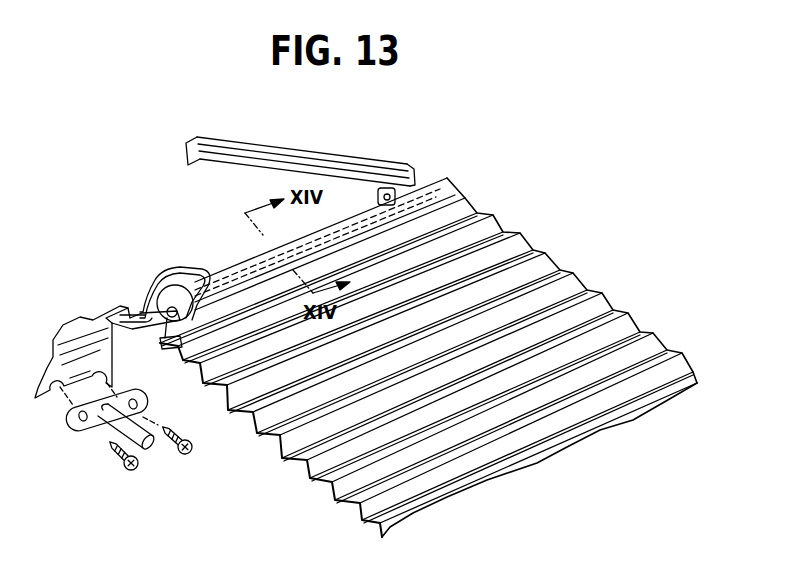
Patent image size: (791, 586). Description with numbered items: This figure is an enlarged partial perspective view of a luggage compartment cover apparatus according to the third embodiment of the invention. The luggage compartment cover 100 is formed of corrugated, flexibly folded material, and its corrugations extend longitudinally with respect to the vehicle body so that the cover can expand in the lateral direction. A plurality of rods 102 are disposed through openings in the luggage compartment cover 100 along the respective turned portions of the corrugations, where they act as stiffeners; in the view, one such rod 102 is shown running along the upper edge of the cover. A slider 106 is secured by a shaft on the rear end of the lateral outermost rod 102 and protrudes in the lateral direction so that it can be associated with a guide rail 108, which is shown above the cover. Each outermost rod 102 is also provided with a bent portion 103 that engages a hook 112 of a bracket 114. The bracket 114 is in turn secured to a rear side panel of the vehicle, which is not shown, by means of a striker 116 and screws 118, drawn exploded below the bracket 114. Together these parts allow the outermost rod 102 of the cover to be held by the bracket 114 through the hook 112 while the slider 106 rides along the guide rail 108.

The luggage compartment cover 100 is at (547, 287).
The rod 102 is at (247, 263).
The bent portion 103 is at (172, 290).
The slider 106 is at (385, 190).
The guide rail 108 is at (343, 160).
The hook 112 is at (165, 290).
The bracket 114 is at (79, 325).
The striker 116 is at (98, 430).
The screws 118 is at (114, 462).